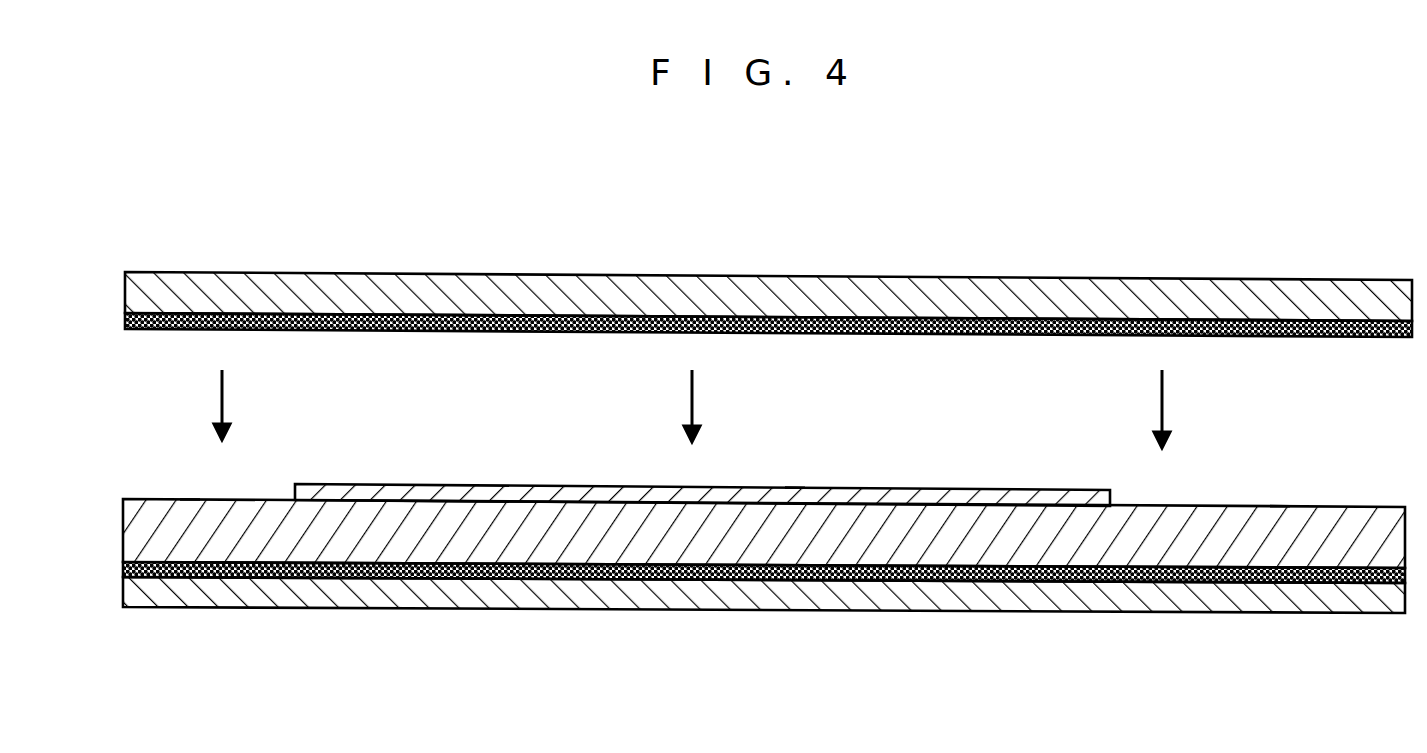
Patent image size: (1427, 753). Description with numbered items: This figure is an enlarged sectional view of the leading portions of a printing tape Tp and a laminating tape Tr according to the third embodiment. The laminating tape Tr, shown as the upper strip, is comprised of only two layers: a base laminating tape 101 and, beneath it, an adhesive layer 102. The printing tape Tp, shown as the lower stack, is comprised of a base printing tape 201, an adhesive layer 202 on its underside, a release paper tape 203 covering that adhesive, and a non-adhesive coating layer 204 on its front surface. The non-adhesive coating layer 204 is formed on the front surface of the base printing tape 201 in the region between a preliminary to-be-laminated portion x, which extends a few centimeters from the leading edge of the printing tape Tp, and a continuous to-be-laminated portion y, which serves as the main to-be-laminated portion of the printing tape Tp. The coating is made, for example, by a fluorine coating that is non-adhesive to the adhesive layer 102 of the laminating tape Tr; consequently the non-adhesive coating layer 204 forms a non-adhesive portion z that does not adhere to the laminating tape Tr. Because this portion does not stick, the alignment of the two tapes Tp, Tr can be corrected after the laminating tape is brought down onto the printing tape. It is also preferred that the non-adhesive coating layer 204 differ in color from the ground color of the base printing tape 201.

The base laminating tape 101 is at (968, 280).
The adhesive layer 102 is at (1085, 325).
The base printing tape 201 is at (1010, 556).
The adhesive layer 202 is at (714, 571).
The release paper tape 203 is at (883, 603).
The non-adhesive coating layer 204 is at (880, 497).
The laminating tape Tr is at (756, 252).
The printing tape Tp is at (754, 543).
The preliminary to-be-laminated portion x is at (188, 490).
The continuous to-be-laminated portion y is at (1280, 493).
The non-adhesive portion z is at (795, 484).